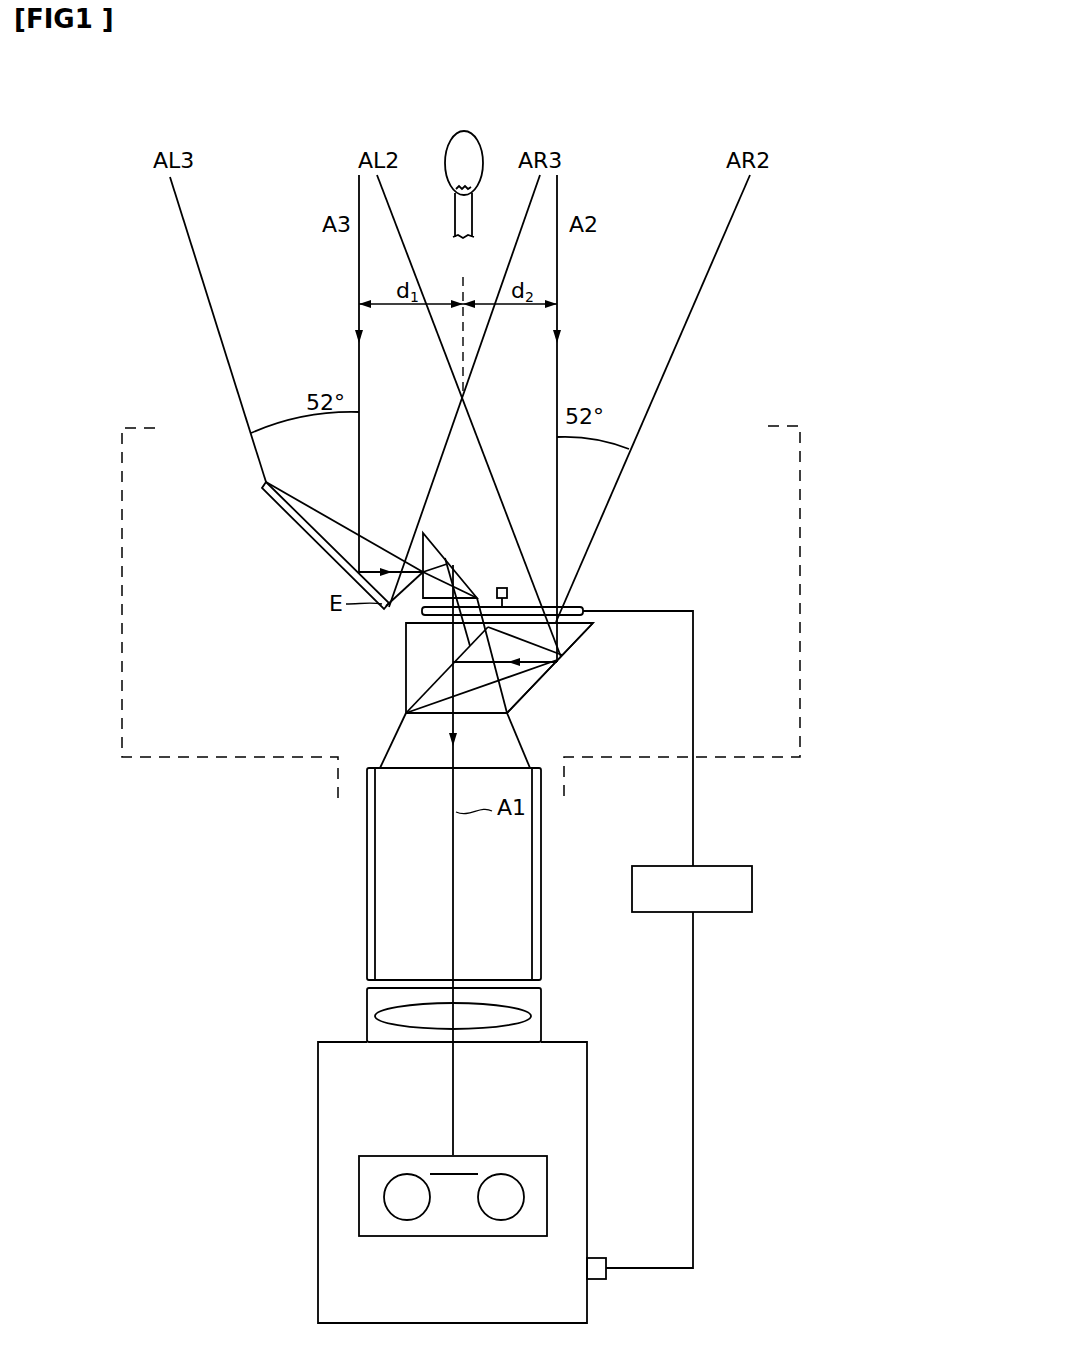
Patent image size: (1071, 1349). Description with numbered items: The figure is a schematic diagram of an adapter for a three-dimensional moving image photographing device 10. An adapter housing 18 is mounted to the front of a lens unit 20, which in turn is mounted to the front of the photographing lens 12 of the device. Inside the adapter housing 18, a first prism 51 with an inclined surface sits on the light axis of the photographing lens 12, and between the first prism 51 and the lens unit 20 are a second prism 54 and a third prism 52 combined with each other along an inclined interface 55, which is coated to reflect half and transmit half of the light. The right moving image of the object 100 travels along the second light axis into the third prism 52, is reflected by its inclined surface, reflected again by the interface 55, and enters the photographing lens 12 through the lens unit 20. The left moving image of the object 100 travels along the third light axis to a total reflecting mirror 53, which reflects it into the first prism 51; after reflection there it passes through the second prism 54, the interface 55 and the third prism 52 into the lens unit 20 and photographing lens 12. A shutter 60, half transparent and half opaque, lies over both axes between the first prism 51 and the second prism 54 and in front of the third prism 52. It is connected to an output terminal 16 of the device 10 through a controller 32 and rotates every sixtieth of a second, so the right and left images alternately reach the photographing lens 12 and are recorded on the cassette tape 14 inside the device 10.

The object 100 is at (463, 142).
The total reflecting mirror 53 is at (300, 530).
The first prism 51 is at (430, 547).
The shutter 60 is at (572, 604).
The controller 32 is at (752, 887).
The second prism 54 is at (406, 638).
The interface 55 is at (433, 690).
The third prism 52 is at (572, 629).
The lens unit 20 is at (367, 875).
The photographing lens 12 is at (380, 1013).
The three-dimensional moving image photographing device 10 is at (327, 1095).
The cassette tape 14 is at (359, 1192).
The output terminal 16 is at (608, 1276).
The adapter housing 18 is at (800, 560).